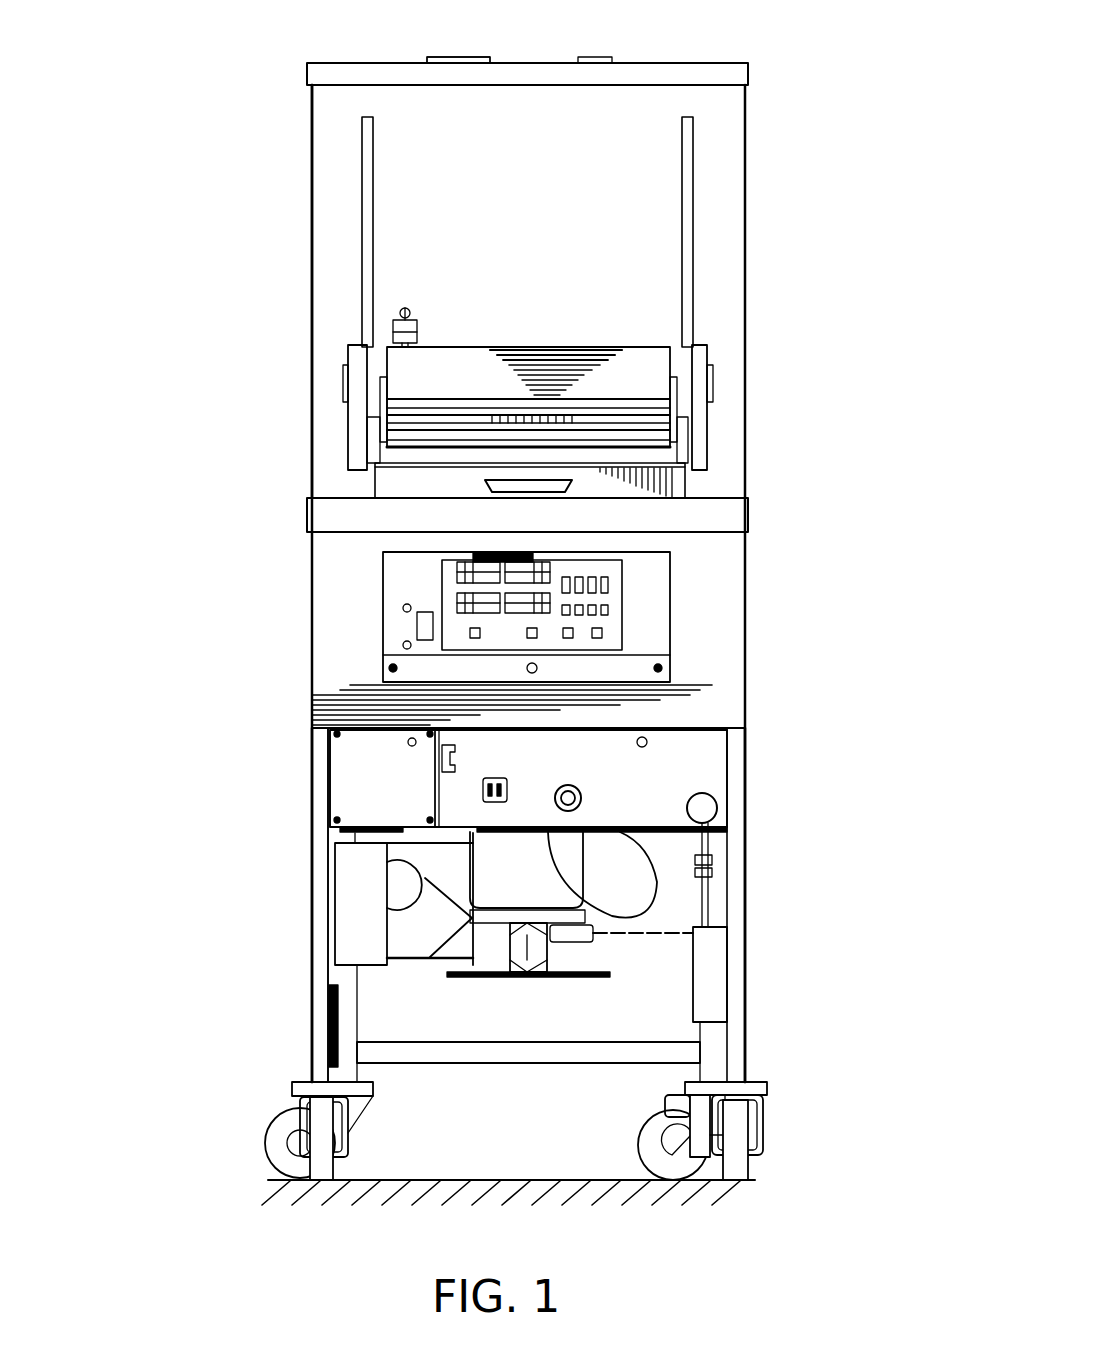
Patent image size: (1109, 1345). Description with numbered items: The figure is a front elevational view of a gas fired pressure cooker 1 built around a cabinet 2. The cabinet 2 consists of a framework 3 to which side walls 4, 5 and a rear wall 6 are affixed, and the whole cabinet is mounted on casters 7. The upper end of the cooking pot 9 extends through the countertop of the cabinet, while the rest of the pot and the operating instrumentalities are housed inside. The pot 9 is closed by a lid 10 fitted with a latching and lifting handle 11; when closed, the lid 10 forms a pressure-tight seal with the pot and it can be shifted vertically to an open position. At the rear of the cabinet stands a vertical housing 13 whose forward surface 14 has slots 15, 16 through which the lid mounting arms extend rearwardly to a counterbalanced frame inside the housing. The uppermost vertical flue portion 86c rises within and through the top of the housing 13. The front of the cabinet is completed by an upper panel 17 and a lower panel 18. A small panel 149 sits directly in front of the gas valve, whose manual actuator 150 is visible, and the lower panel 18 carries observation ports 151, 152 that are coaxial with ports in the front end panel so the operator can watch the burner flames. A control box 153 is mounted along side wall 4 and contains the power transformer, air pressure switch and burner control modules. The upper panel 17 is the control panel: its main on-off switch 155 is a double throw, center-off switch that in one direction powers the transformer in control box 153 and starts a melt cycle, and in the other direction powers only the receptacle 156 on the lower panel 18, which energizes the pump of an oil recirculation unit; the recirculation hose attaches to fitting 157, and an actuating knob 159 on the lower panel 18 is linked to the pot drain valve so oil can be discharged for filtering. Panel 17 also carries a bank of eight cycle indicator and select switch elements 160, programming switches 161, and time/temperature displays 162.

The pressure cooker 1 is at (747, 205).
The cabinet 2 is at (732, 662).
The framework 3 is at (478, 1052).
The side wall 4 is at (747, 890).
The side wall 5 is at (312, 940).
The rear wall 6 is at (451, 1032).
The casters 7 is at (320, 1170).
The cooking pot 9 is at (433, 477).
The lid 10 is at (432, 380).
The latching and lifting handle 11 is at (430, 435).
The vertical housing 13 is at (746, 145).
The forward surface 14 is at (526, 214).
The slot 15 is at (685, 157).
The slot 16 is at (370, 157).
The upper panel 17 is at (652, 637).
The lower panel 18 is at (698, 763).
The vertical flue portion 86c is at (495, 58).
The small panel 149 is at (347, 778).
The manual actuator 150 is at (455, 748).
The observation port 151 is at (642, 738).
The observation port 152 is at (410, 748).
The control box 153 is at (707, 1000).
The main on-off switch 155 is at (425, 630).
The receptacle 156 is at (492, 778).
The fitting 157 is at (582, 795).
The actuating knob 159 is at (712, 803).
The cycle indicator and select switch elements 160 is at (452, 578).
The programming switches 161 is at (610, 610).
The time/temperature displays 162 is at (610, 581).